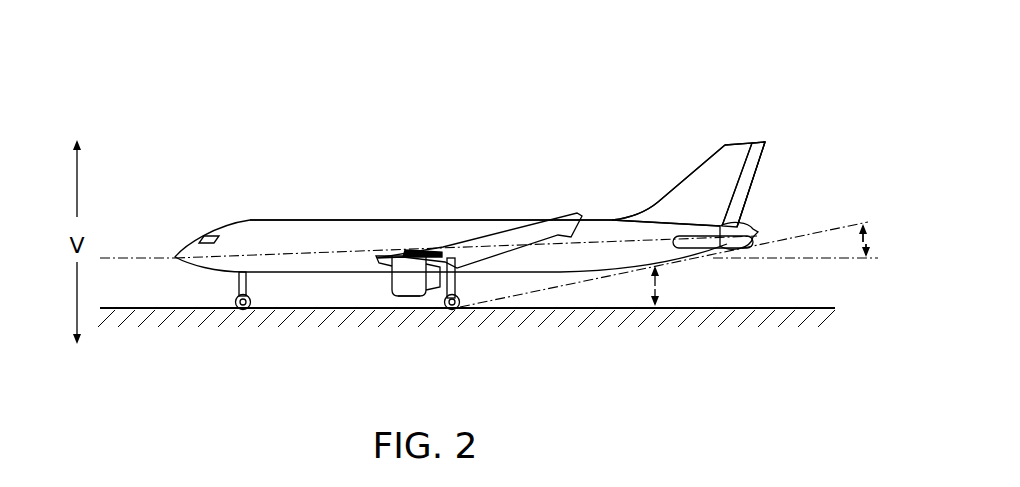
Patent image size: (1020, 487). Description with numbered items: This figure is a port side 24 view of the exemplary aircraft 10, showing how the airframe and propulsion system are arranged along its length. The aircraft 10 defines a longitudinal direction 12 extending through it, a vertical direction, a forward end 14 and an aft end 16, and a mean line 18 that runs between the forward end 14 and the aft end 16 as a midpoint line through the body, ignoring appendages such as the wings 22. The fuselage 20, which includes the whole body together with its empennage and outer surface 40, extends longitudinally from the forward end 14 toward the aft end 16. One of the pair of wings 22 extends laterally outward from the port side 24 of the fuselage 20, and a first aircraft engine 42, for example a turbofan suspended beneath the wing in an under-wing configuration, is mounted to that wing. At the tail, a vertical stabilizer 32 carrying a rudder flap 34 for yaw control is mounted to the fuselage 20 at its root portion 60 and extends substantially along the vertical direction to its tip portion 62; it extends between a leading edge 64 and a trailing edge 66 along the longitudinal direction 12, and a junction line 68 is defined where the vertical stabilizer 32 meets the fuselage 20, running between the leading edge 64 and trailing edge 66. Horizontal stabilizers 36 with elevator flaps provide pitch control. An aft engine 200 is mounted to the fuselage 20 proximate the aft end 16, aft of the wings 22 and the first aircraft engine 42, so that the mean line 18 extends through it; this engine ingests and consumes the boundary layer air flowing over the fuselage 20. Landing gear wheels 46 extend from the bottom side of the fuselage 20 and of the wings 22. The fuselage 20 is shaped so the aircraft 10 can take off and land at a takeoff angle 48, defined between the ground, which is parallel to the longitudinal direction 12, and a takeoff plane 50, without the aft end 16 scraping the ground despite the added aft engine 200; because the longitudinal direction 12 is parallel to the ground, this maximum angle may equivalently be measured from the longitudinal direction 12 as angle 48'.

The aircraft 10 is at (224, 182).
The longitudinal direction 12 is at (117, 257).
The forward end 14 is at (177, 285).
The aft end 16 is at (785, 228).
The mean line 18 is at (292, 250).
The fuselage 20 is at (260, 267).
The wings 22 is at (520, 242).
The port side 24 is at (550, 274).
The vertical stabilizer 32 is at (722, 176).
The rudder flap 34 is at (767, 152).
The horizontal stabilizers 36 is at (713, 256).
The outer surface 40 is at (398, 201).
The first aircraft engine 42 is at (392, 308).
The wheels 46 is at (447, 304).
The takeoff angle 48 is at (672, 323).
The maximum takeoff angle 48' is at (872, 278).
The takeoff plane 50 is at (563, 288).
The root portion 60 is at (682, 204).
The tip portion 62 is at (750, 132).
The leading edge 64 is at (681, 157).
The trailing edge 66 is at (774, 171).
The junction line 68 is at (648, 220).
The aft engine 200 is at (759, 207).